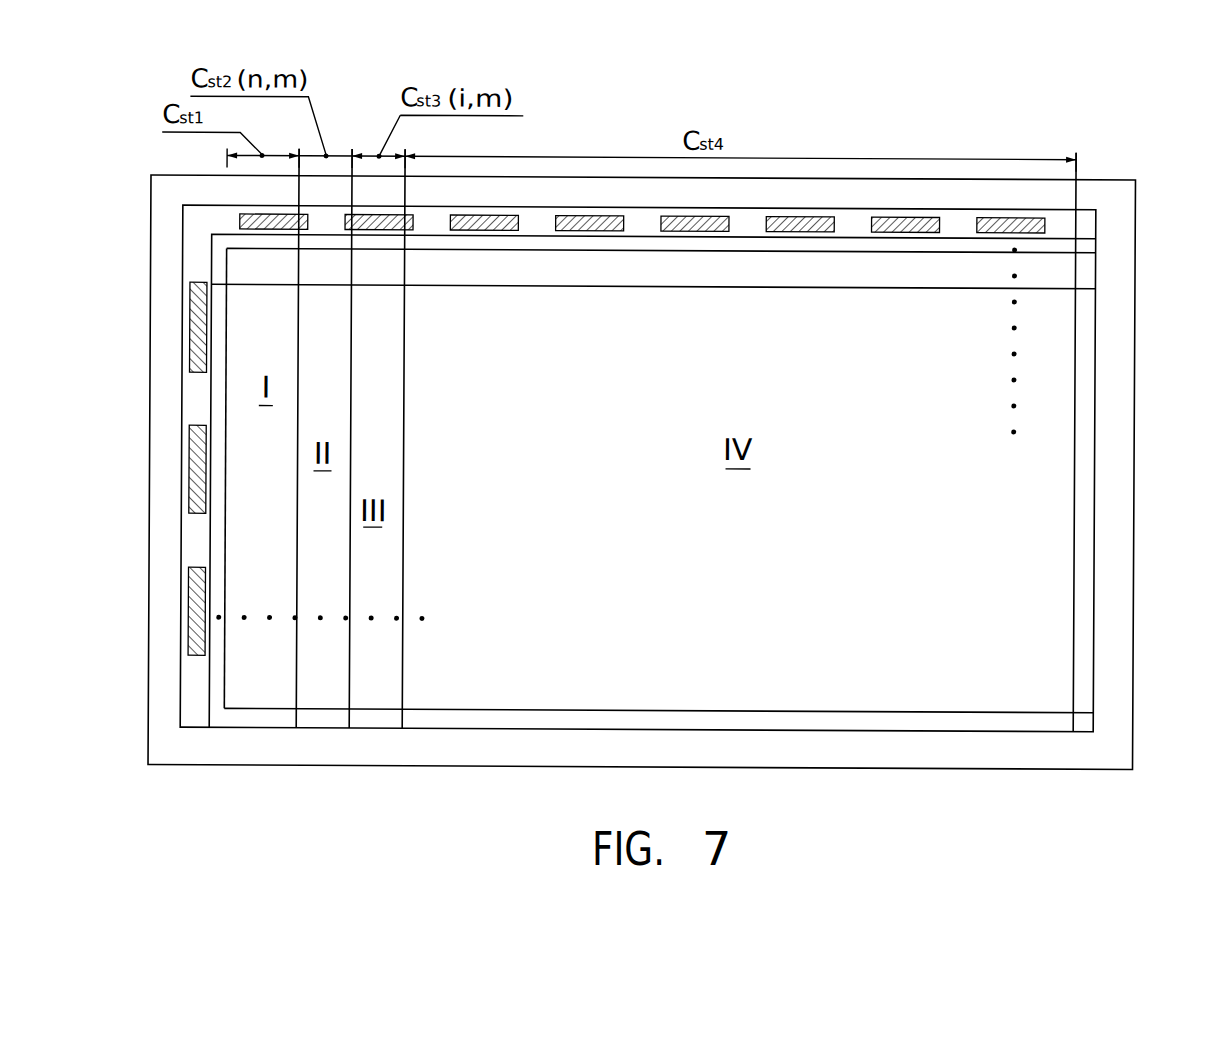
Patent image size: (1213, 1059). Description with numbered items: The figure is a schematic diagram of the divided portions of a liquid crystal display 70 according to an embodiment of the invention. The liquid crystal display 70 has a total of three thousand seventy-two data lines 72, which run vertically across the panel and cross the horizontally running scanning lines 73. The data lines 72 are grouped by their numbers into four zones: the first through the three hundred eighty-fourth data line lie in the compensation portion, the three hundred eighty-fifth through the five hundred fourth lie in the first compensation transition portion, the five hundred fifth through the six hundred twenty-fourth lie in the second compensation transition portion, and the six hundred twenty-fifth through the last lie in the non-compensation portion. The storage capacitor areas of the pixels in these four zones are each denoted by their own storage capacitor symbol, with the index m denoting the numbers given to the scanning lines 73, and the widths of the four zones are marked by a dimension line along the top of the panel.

The liquid crystal display 70 is at (955, 132).
The data lines 72 is at (296, 715).
The scanning lines 73 is at (1085, 248).